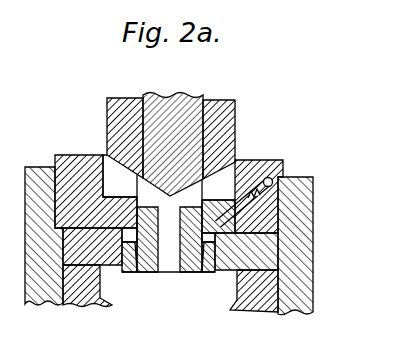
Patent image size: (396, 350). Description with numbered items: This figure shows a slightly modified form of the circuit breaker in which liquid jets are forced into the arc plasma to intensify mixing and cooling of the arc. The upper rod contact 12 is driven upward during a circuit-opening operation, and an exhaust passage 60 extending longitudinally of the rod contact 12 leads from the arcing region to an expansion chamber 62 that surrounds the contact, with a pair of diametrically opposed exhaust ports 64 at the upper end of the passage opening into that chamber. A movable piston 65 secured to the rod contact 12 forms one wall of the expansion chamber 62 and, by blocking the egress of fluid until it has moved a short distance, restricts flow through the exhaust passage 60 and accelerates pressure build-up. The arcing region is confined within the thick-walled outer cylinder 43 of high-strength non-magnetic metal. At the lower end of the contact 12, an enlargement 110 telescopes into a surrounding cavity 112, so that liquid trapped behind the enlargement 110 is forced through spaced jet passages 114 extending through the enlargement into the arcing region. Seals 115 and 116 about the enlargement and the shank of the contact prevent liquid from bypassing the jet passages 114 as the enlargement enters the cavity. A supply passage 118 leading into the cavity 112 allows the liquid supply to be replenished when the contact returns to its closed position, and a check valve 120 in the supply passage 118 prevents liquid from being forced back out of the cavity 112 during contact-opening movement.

The rod contact 12 is at (190, 93).
The movable piston 65 is at (107, 106).
The expansion chamber 62 is at (104, 157).
The exhaust ports 64 is at (137, 190).
The exhaust passage 60 is at (170, 224).
The seal 116 is at (202, 206).
The seal 115 is at (118, 247).
The jet passages 114 is at (179, 273).
The enlargement 110 is at (208, 273).
The cavity 112 is at (216, 247).
The supply passage 118 is at (284, 169).
The check valve 120 is at (268, 178).
The outer cylinder 43 is at (305, 263).